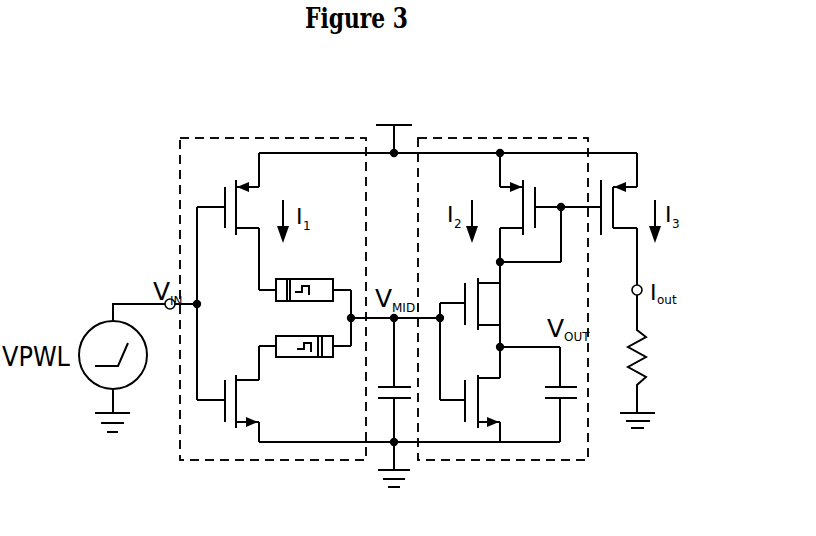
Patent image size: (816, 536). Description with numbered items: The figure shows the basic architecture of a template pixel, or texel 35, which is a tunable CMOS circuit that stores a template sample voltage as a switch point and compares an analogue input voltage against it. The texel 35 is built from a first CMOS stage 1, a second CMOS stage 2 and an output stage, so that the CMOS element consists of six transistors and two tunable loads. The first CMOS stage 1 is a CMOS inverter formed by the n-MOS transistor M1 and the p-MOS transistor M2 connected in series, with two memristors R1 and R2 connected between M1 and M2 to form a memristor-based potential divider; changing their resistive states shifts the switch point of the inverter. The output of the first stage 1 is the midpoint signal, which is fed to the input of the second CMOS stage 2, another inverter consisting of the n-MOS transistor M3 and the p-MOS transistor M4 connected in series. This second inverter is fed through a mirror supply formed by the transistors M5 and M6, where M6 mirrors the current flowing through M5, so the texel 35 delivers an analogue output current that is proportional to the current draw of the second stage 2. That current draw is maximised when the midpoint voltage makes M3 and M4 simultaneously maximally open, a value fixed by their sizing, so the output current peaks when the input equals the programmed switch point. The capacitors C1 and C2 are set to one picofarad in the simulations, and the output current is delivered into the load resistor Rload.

The texel 35 is at (628, 117).
The first CMOS stage 1 is at (182, 186).
The second CMOS stage 2 is at (588, 267).
The n-MOS transistor M1 is at (228, 394).
The p-MOS transistor M2 is at (251, 276).
The n-MOS transistor M3 is at (476, 394).
The p-MOS transistor M4 is at (477, 296).
The mirror supply transistor M5 is at (528, 207).
The mirror supply transistor M6 is at (643, 219).
The memristor R1 is at (305, 286).
The memristor R2 is at (305, 346).
The capacitor C1 is at (378, 380).
The capacitor C2 is at (580, 394).
The load resistor Rload is at (659, 361).